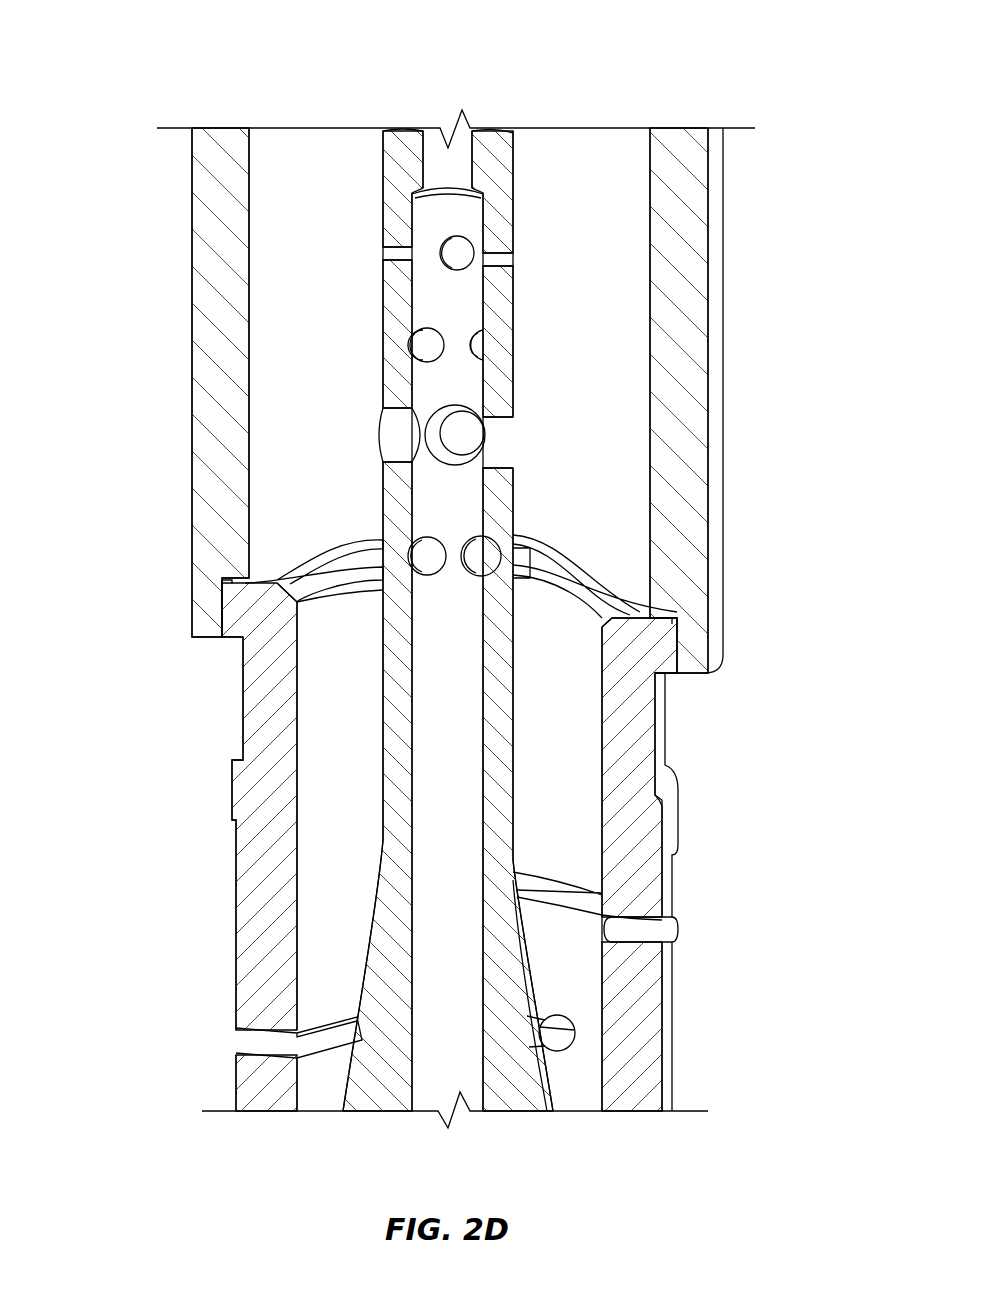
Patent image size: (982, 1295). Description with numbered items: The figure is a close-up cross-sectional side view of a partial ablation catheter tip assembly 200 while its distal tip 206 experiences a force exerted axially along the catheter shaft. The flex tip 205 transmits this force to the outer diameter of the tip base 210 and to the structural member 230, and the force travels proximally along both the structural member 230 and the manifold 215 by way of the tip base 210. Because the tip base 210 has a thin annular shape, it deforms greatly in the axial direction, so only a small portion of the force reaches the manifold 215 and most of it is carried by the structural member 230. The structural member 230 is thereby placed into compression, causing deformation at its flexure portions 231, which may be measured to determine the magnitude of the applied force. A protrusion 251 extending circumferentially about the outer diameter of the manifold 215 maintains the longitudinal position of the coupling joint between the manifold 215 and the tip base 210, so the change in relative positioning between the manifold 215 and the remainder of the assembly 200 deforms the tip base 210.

The partial ablation catheter tip assembly 200 is at (200, 77).
The flex tip 205 is at (182, 607).
The distal tip 206 is at (495, 108).
The tip base 210 is at (318, 545).
The manifold 215 is at (370, 983).
The structural member 230 is at (232, 886).
The flexure portions 231 is at (678, 921).
The protrusion 251 is at (515, 550).